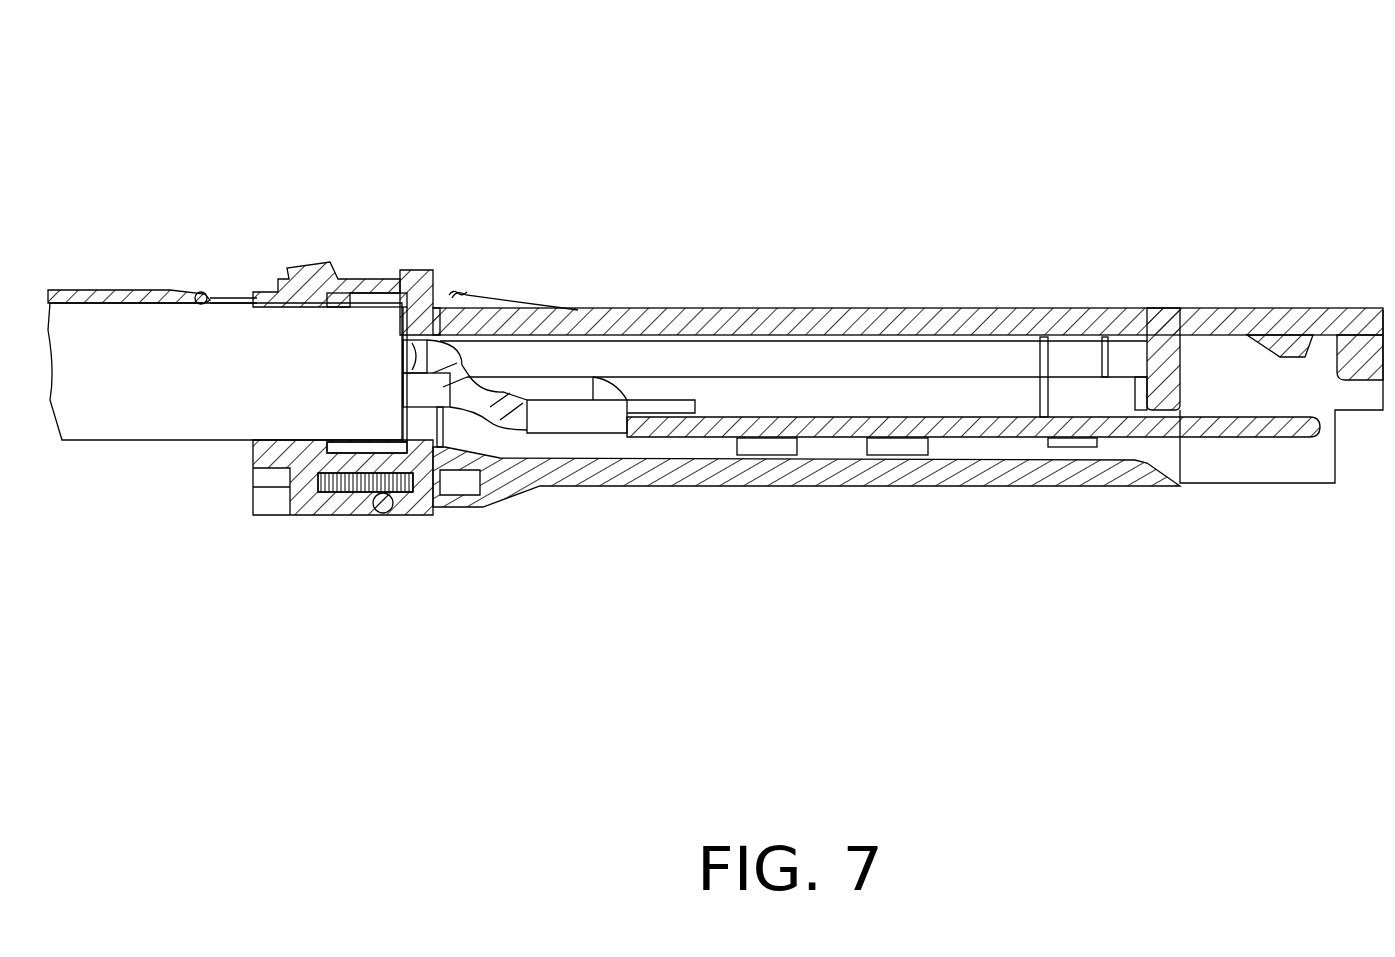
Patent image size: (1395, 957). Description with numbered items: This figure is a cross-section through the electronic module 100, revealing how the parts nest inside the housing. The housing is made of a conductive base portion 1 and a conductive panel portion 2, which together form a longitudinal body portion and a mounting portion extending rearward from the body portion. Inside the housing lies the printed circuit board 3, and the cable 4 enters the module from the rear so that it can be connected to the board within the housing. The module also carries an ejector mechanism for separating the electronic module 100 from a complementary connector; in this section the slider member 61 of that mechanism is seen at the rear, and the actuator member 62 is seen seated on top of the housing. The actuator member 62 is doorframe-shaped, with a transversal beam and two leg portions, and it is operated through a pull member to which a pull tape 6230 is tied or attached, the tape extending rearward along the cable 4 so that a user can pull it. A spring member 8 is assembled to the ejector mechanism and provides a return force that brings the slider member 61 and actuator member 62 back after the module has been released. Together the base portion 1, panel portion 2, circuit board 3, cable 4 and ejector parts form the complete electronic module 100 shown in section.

The electronic module 100 is at (693, 88).
The conductive base portion 1 is at (738, 478).
The conductive panel portion 2 is at (733, 318).
The printed circuit board 3 is at (660, 460).
The cable 4 is at (182, 398).
The slider member 61 is at (317, 515).
The actuator member 62 is at (312, 270).
The pull tape 6230 is at (103, 290).
The spring member 8 is at (381, 512).